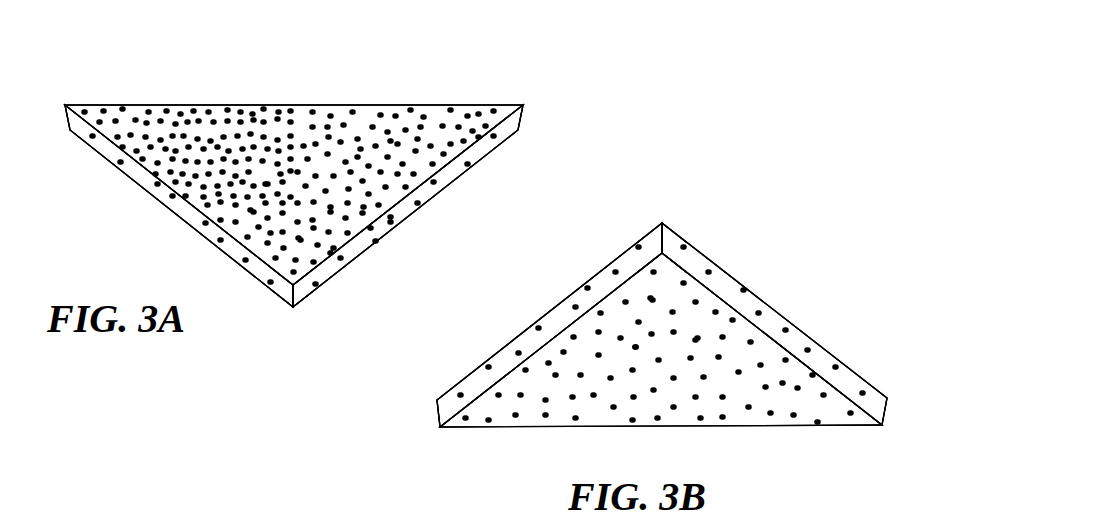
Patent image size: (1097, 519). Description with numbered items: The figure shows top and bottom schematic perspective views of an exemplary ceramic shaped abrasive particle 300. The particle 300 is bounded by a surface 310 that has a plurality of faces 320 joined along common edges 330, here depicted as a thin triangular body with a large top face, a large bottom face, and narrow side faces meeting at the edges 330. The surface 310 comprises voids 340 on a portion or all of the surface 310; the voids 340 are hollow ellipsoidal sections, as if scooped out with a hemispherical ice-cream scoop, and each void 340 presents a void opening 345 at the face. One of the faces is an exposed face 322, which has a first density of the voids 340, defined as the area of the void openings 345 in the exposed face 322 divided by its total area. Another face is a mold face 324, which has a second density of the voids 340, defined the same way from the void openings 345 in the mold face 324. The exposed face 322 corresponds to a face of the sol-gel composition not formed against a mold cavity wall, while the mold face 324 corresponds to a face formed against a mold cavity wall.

In FIG. 3A, the ceramic shaped abrasive particle 300 is at (426, 82).
In FIG. 3B, the ceramic shaped abrasive particle 300 is at (735, 245).
In FIG. 3A, the surface 310 is at (137, 112).
In FIG. 3B, the surface 310 is at (503, 418).
In FIG. 3A, the faces 320 is at (137, 145).
In FIG. 3B, the faces 320 is at (505, 383).
In FIG. 3A, the exposed face 322 is at (425, 158).
In FIG. 3B, the exposed face 322 is at (790, 370).
In FIG. 3A, the mold face 324 is at (193, 220).
In FIG. 3B, the mold face 324 is at (559, 309).
In FIG. 3A, the common edges 330 is at (257, 258).
In FIG. 3B, the common edges 330 is at (625, 272).
In FIG. 3A, the voids 340 is at (227, 135).
In FIG. 3B, the voids 340 is at (594, 397).
In FIG. 3A, the void openings 345 is at (265, 183).
In FIG. 3B, the void openings 345 is at (635, 349).